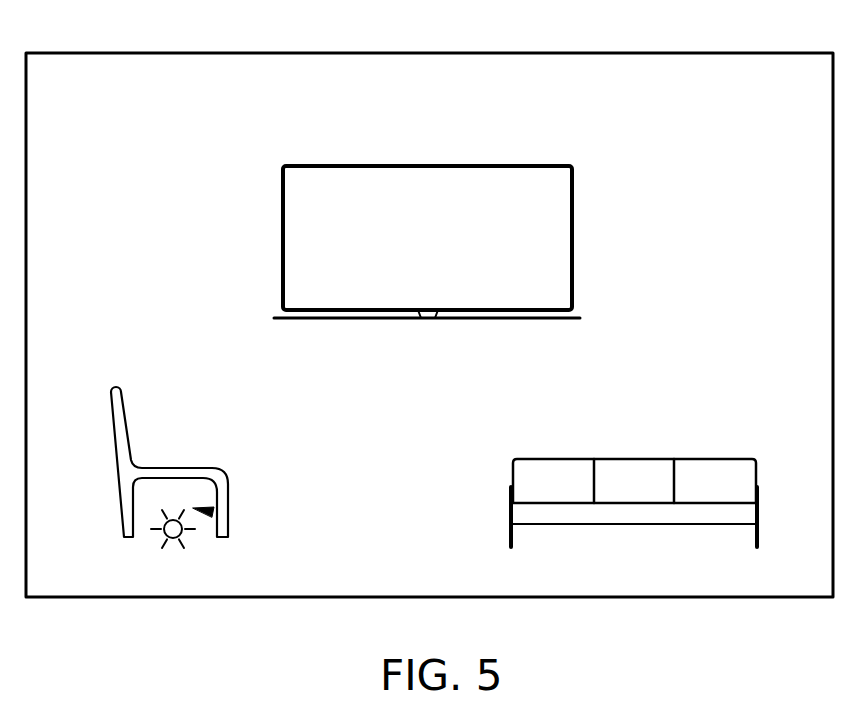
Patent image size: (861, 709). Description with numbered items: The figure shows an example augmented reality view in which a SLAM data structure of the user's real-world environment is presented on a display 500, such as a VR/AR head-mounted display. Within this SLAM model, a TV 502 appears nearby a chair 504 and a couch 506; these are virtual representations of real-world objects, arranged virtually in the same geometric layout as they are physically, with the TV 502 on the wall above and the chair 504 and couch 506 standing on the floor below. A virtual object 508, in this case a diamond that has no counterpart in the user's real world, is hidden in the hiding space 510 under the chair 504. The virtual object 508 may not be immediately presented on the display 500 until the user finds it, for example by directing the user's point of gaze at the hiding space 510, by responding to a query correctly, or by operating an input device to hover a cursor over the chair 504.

The display 500 is at (430, 52).
The TV 502 is at (428, 166).
The chair 504 is at (115, 387).
The couch 506 is at (634, 458).
The virtual object 508 is at (175, 540).
The hiding space 510 is at (213, 512).